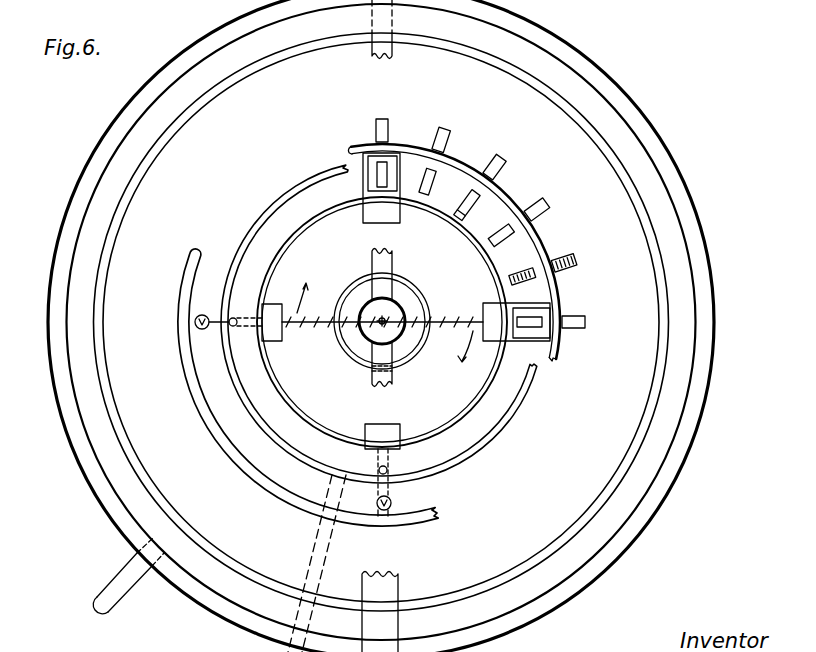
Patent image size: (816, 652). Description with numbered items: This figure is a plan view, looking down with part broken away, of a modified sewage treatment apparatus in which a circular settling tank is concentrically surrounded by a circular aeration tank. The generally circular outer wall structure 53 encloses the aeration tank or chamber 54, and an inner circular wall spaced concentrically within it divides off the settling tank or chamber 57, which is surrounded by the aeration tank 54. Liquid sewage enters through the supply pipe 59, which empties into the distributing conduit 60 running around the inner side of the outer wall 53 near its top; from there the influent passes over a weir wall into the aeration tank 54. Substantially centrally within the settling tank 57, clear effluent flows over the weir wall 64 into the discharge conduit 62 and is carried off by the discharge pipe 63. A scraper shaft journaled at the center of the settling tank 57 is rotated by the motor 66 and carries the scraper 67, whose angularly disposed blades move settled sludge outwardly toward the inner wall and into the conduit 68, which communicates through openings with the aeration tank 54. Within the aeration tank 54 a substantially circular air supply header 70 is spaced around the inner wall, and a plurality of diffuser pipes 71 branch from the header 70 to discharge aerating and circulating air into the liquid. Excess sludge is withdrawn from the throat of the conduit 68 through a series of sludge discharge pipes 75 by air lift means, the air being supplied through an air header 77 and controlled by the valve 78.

The outer wall structure 53 is at (690, 186).
The aeration tank or chamber 54 is at (607, 476).
The settling tank or chamber 57 is at (462, 403).
The supply pipe 59 is at (118, 596).
The distributing conduit 60 is at (684, 364).
The discharge conduit 62 is at (402, 291).
The discharge pipe 63 is at (372, 255).
The weir wall 64 is at (413, 357).
The motor 66 is at (400, 313).
The scraper 67 is at (306, 329).
The conduit 68 is at (478, 223).
The air supply header 70 is at (553, 294).
The diffuser pipes 71 is at (573, 258).
The sludge discharge pipes 75 is at (229, 333).
The air header 77 is at (177, 339).
The valve 78 is at (202, 315).